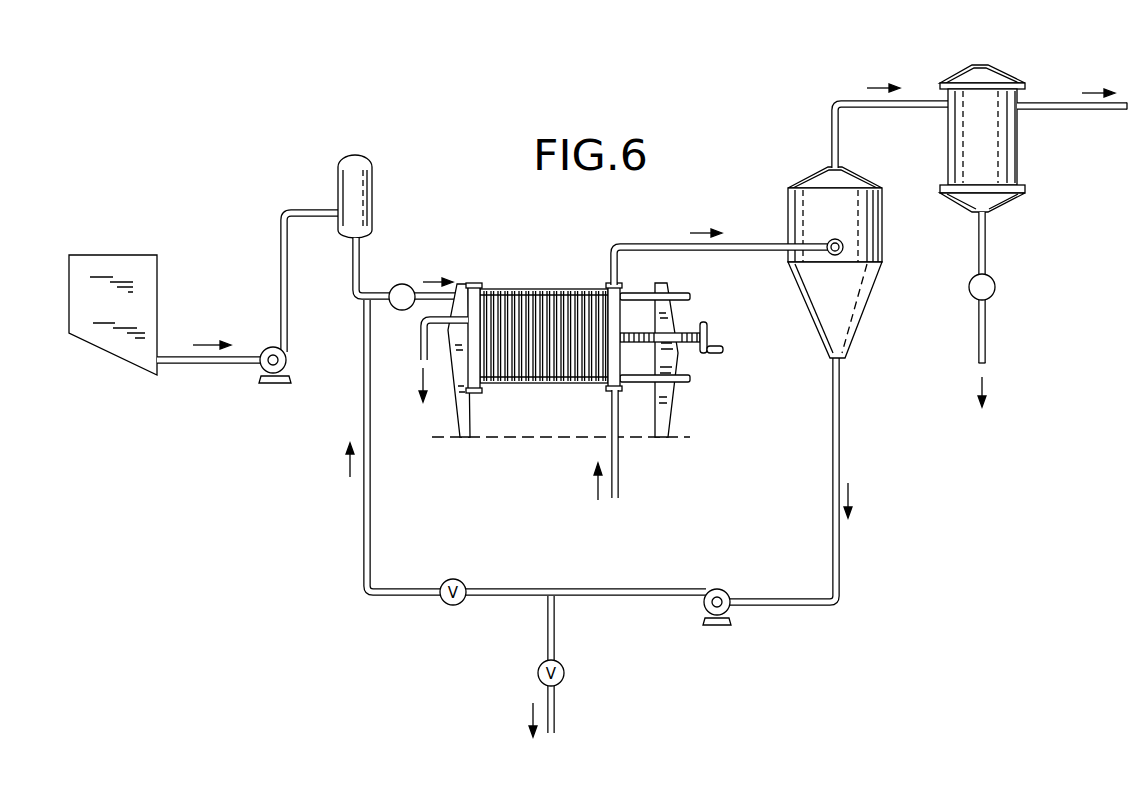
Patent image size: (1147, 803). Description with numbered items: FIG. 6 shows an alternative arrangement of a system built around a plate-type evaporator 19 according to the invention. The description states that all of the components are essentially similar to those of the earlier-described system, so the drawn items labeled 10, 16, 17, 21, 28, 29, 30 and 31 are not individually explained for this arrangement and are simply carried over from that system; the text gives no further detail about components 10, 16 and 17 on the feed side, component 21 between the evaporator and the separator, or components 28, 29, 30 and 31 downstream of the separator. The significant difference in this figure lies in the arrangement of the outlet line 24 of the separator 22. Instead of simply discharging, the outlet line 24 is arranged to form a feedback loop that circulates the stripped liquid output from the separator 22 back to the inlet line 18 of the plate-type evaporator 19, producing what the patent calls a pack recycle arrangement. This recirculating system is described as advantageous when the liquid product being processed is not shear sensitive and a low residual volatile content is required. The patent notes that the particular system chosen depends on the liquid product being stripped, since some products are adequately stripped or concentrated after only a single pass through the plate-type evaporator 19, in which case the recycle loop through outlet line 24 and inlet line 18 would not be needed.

The liquid supply tank 10 is at (118, 263).
The feed conduit 16 is at (280, 287).
The surge vessel 17 is at (364, 192).
The inlet line 18 is at (379, 296).
The plate-type evaporator 19 is at (540, 290).
The transfer conduit 21 is at (743, 251).
The separator 22 is at (800, 208).
The outlet line 24 is at (840, 437).
The vapor conduit 28 is at (832, 125).
The filter vessel 29 is at (982, 72).
The outlet conduit 30 is at (1075, 110).
The drain conduit 31 is at (986, 325).